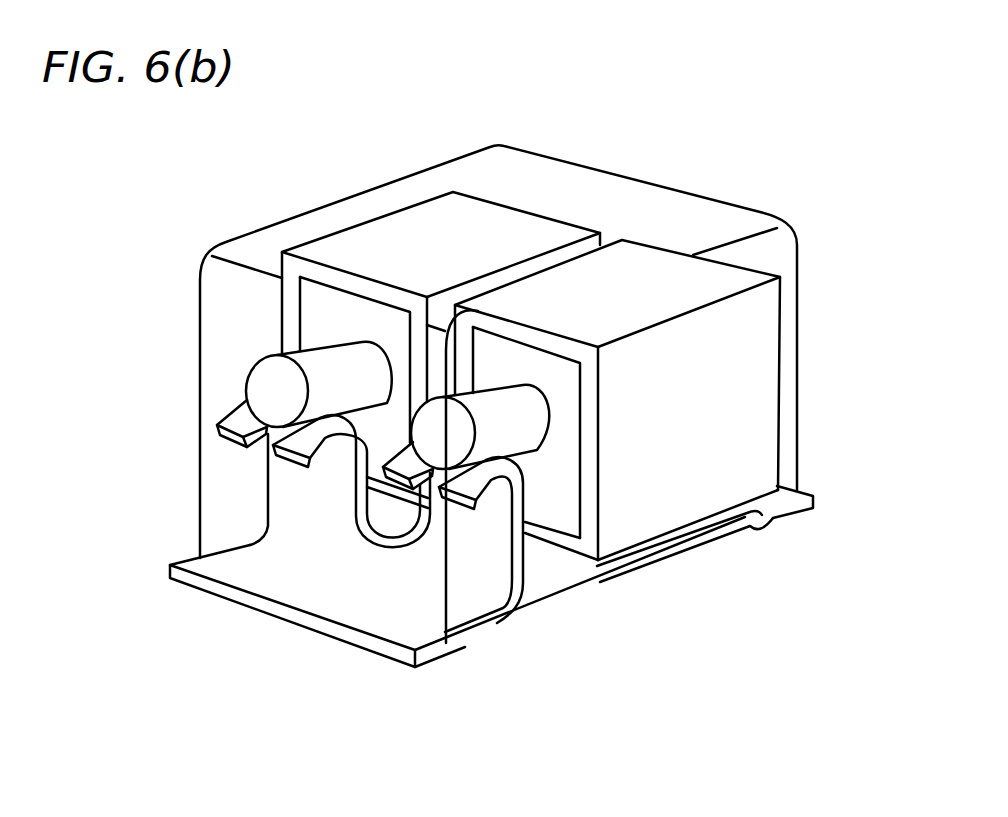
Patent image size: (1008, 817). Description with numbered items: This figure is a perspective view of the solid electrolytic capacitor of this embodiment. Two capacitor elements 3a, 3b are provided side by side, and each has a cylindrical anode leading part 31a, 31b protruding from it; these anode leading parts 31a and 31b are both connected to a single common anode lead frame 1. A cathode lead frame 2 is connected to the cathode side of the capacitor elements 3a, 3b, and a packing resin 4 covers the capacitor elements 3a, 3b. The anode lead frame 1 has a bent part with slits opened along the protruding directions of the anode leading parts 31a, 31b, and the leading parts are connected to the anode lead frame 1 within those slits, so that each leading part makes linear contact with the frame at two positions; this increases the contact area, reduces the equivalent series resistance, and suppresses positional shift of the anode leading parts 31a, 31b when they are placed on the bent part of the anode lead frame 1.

The anode lead frame 1 is at (480, 588).
The cathode lead frame 2 is at (790, 510).
The capacitor element 3a is at (383, 243).
The capacitor element 3b is at (708, 386).
The packing resin 4 is at (232, 296).
The anode leading part 31a is at (272, 393).
The anode leading part 31b is at (515, 432).